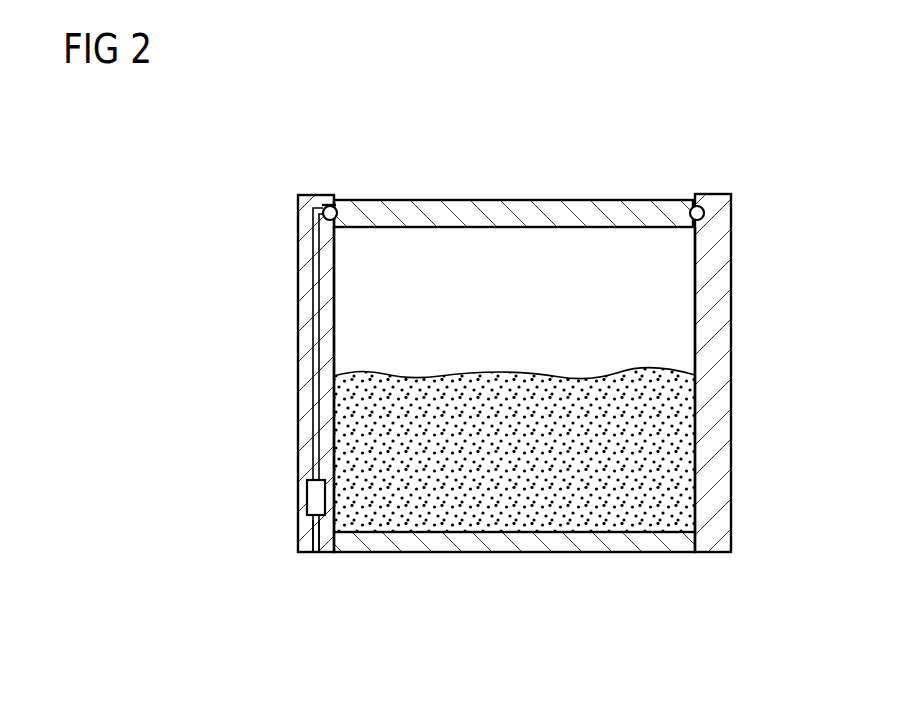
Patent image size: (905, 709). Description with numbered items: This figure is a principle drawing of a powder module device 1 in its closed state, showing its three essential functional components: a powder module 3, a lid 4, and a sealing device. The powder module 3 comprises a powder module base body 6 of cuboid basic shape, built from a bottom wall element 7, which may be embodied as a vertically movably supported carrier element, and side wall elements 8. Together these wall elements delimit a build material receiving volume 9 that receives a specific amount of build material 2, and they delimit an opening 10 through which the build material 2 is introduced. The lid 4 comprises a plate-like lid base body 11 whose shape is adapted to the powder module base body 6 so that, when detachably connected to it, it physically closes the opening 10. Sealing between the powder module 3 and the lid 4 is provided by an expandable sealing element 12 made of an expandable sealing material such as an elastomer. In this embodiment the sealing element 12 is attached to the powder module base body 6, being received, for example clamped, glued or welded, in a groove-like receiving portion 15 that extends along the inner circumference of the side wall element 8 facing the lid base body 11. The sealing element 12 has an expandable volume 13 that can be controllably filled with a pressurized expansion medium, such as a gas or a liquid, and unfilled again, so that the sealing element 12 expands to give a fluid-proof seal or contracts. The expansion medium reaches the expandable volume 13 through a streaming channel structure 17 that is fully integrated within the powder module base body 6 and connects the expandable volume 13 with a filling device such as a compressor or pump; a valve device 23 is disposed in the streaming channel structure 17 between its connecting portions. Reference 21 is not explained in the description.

The powder module device 1 is at (456, 329).
The build material 2 is at (675, 483).
The powder module 3 is at (428, 373).
The powder module base body 6 is at (216, 441).
The lid 4 is at (513, 149).
The lid base body 11 is at (517, 182).
The bottom wall element 7 is at (522, 543).
The side wall element 8 is at (312, 533).
The build material receiving volume 9 is at (672, 332).
The opening 10 is at (398, 285).
The sealing element 12 is at (513, 162).
The expandable volume 13 is at (350, 200).
The receiving portion 15 is at (326, 192).
The streaming channel structure 17 is at (318, 408).
The outlet 21 is at (328, 553).
The valve device 23 is at (306, 490).